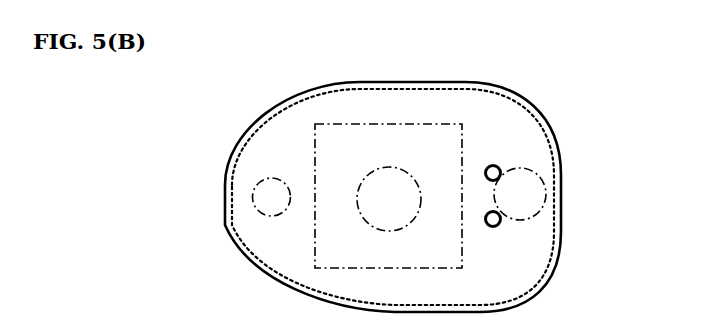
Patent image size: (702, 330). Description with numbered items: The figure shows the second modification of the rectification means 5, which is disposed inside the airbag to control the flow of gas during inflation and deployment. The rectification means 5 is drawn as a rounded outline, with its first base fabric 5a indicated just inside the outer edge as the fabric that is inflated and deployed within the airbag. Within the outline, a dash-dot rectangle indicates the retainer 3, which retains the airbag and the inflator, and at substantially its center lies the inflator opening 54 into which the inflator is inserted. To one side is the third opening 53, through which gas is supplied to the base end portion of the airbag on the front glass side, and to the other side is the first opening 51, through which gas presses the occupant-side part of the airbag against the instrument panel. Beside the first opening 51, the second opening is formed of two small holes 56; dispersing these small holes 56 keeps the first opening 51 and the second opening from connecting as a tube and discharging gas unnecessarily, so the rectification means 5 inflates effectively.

The rectification means 5 is at (549, 105).
The first base fabric 5a is at (403, 92).
The retainer 3 is at (463, 252).
The first opening 51 is at (519, 169).
The third opening 53 is at (283, 177).
The inflator opening 54 is at (368, 175).
The small holes 56 is at (485, 171).